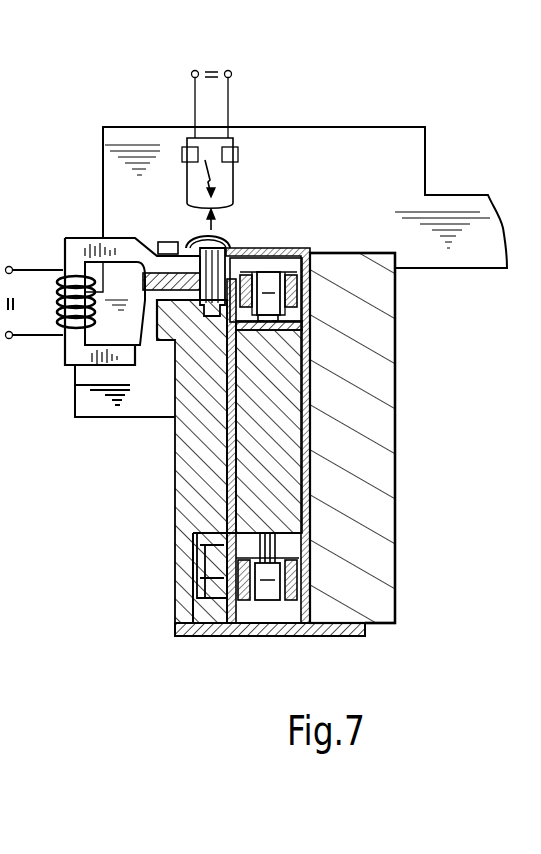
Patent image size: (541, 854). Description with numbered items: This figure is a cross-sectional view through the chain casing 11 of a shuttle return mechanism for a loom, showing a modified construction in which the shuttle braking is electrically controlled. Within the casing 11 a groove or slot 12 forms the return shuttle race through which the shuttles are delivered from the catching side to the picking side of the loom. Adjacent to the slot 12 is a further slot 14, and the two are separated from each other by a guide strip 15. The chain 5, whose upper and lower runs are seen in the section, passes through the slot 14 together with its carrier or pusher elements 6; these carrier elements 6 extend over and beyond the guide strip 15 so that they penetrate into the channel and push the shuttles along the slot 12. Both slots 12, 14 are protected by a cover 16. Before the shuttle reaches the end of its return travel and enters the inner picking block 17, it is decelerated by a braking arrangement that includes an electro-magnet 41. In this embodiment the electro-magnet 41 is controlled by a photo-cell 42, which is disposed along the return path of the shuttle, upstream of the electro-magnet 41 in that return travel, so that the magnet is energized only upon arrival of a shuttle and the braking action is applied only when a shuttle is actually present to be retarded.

The chain 5 is at (293, 270).
The carrier element 6 is at (247, 268).
The casing 11 is at (383, 452).
The slot 12 is at (208, 318).
The further slot 14 is at (242, 328).
The guide strip 15 is at (232, 497).
The cover 16 is at (283, 250).
The inner picking block 17 is at (353, 138).
The electro-magnet 41 is at (68, 252).
The photo-cell 42 is at (190, 140).